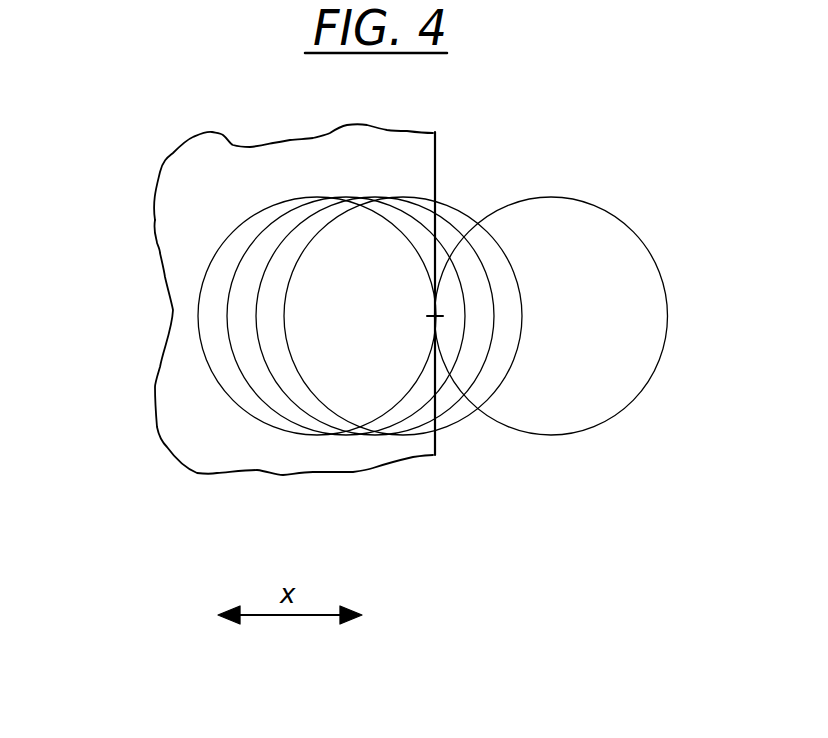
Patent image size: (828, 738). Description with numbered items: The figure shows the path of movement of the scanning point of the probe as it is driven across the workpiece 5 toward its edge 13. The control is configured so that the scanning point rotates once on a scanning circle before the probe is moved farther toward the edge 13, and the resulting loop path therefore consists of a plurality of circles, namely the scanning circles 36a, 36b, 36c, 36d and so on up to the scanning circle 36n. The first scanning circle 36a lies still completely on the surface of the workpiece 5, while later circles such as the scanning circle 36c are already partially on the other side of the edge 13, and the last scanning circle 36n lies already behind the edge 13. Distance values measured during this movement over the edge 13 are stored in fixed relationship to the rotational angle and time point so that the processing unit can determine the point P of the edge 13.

The workpiece 5 is at (365, 453).
The edge 13 is at (435, 434).
The scanning circle 36a is at (255, 422).
The scanning circle 36b is at (227, 323).
The scanning circle 36c is at (258, 258).
The scanning circle 36d is at (435, 212).
The scanning circle 36n is at (655, 263).
The point of the edge P is at (433, 317).